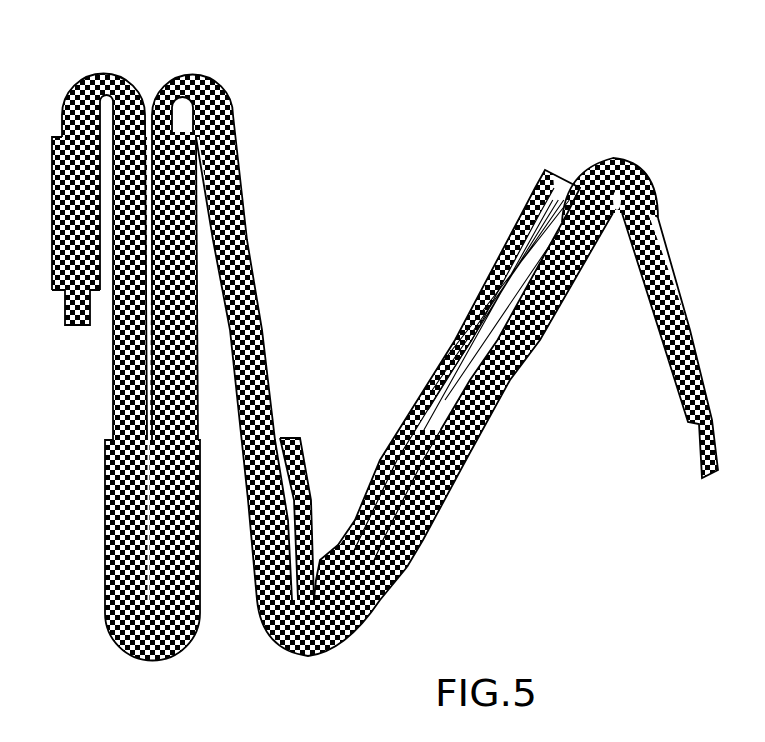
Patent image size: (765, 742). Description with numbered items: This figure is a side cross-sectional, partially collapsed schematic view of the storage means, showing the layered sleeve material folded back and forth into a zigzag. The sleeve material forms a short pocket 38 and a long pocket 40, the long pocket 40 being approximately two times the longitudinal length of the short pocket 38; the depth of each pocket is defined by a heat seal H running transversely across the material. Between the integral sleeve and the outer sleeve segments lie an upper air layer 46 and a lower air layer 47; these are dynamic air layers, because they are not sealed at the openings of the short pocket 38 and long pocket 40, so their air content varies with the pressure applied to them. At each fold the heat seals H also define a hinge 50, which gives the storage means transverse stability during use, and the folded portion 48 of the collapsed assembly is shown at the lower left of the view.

The short pocket 38 is at (281, 440).
The long pocket 40 is at (537, 170).
The upper air layer 46 is at (535, 243).
The lower air layer 47 is at (540, 330).
The folded leg 48 is at (130, 520).
The hinge 50 is at (143, 667).
The heat seal H is at (102, 72).